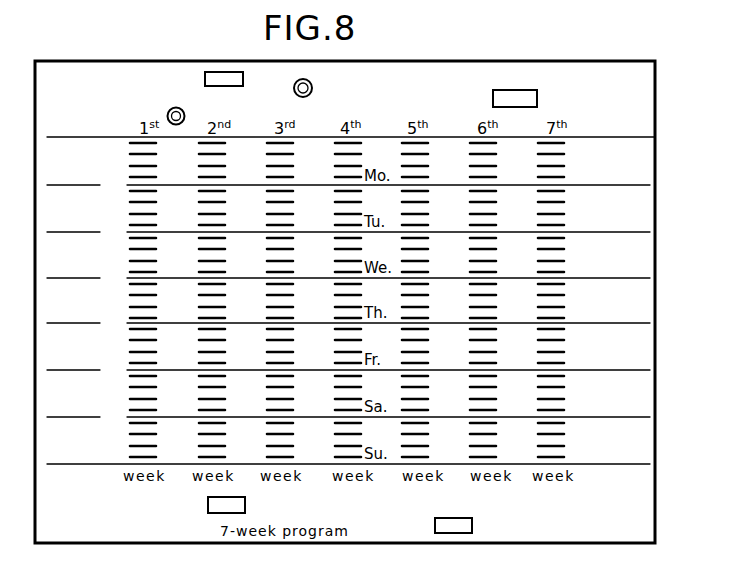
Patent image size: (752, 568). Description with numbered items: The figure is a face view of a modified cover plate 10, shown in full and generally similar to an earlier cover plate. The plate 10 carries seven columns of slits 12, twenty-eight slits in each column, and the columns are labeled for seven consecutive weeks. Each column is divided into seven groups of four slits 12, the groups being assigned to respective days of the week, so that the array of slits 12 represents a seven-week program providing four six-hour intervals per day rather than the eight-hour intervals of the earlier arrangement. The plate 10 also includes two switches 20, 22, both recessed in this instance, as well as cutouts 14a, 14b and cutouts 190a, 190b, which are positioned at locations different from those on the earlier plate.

The plate 10 is at (637, 223).
The slits 12 is at (294, 423).
The cutout 14a is at (513, 89).
The cutout 14b is at (212, 506).
The switch 20 is at (312, 90).
The switch 22 is at (168, 110).
The cutout 190a is at (224, 79).
The cutout 190b is at (458, 523).